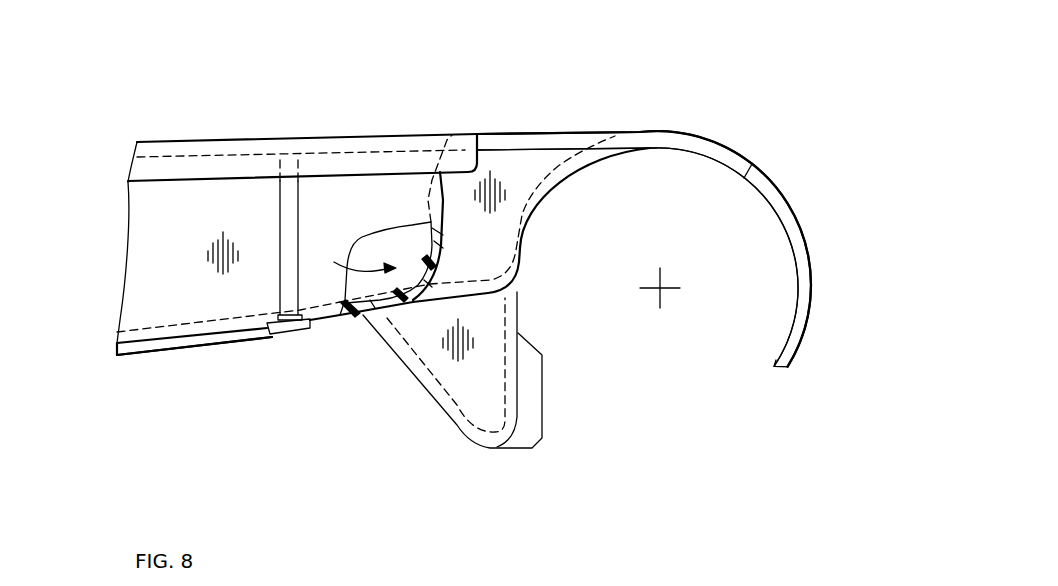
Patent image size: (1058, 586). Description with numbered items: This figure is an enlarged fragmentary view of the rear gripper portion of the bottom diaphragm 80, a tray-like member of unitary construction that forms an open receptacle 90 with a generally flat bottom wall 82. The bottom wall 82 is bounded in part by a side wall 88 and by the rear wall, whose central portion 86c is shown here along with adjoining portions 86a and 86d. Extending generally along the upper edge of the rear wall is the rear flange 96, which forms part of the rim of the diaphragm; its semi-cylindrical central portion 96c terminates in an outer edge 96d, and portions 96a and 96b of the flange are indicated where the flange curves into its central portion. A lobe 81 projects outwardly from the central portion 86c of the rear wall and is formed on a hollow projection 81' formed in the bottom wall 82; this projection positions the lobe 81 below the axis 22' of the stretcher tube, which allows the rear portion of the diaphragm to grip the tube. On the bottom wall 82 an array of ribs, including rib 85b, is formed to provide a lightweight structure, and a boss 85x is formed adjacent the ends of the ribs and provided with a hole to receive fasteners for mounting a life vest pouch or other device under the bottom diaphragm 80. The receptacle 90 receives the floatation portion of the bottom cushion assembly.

The bottom diaphragm 80 is at (370, 137).
The lobe 81 is at (500, 370).
The hollow projection 81' is at (446, 387).
The bottom wall 82 is at (110, 342).
The rib 85b is at (170, 348).
The boss 85x is at (300, 336).
The curved lip 86a is at (430, 252).
The central portion of rear wall 86c is at (523, 235).
The bracket wall 86d is at (515, 187).
The side wall 88 is at (145, 226).
The open receptacle 90 is at (351, 262).
The rear flange 96 is at (547, 140).
The hook straight portion 96a is at (703, 142).
The hook transition 96b is at (760, 172).
The semi-cylindrical central portion of rear flange 96c is at (808, 290).
The outer edge of rear flange 96d is at (785, 376).
The axis of stretcher tube 22' is at (687, 321).